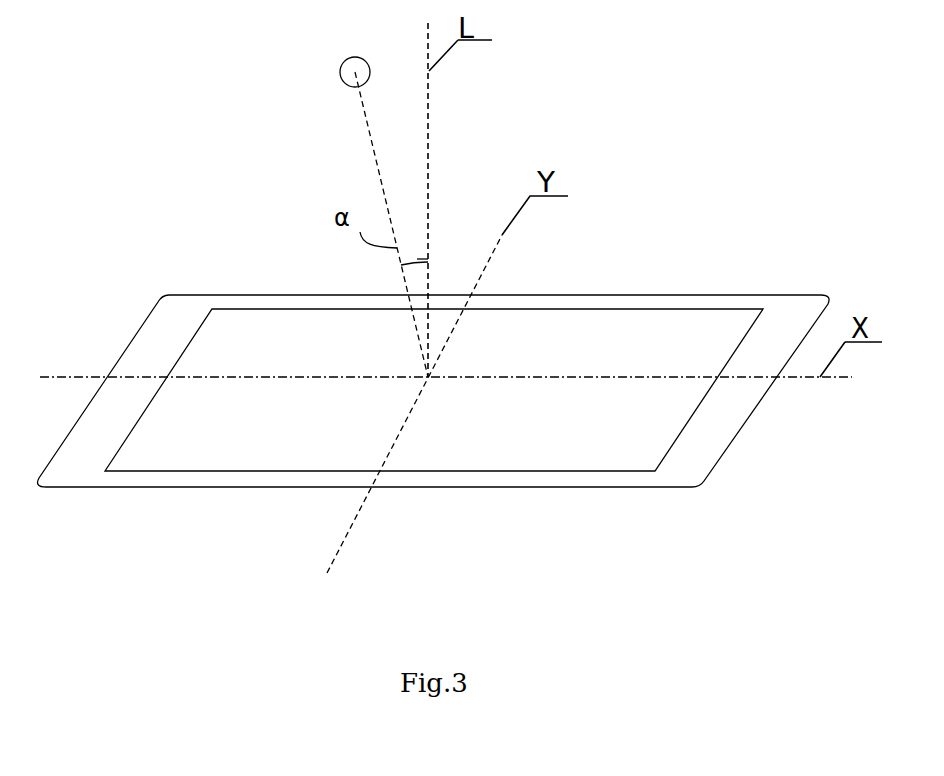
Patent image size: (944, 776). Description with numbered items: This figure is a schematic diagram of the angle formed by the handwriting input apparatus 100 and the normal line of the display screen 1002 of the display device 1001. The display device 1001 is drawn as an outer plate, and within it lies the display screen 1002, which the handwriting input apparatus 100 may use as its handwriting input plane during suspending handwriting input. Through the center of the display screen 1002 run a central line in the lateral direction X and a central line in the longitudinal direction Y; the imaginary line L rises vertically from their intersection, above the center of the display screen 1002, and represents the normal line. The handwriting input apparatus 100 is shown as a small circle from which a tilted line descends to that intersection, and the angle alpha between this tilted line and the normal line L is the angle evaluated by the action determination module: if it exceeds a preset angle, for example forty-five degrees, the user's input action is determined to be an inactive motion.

The handwriting input apparatus 100 is at (342, 68).
The display device 1001 is at (787, 295).
The display screen 1002 is at (611, 309).